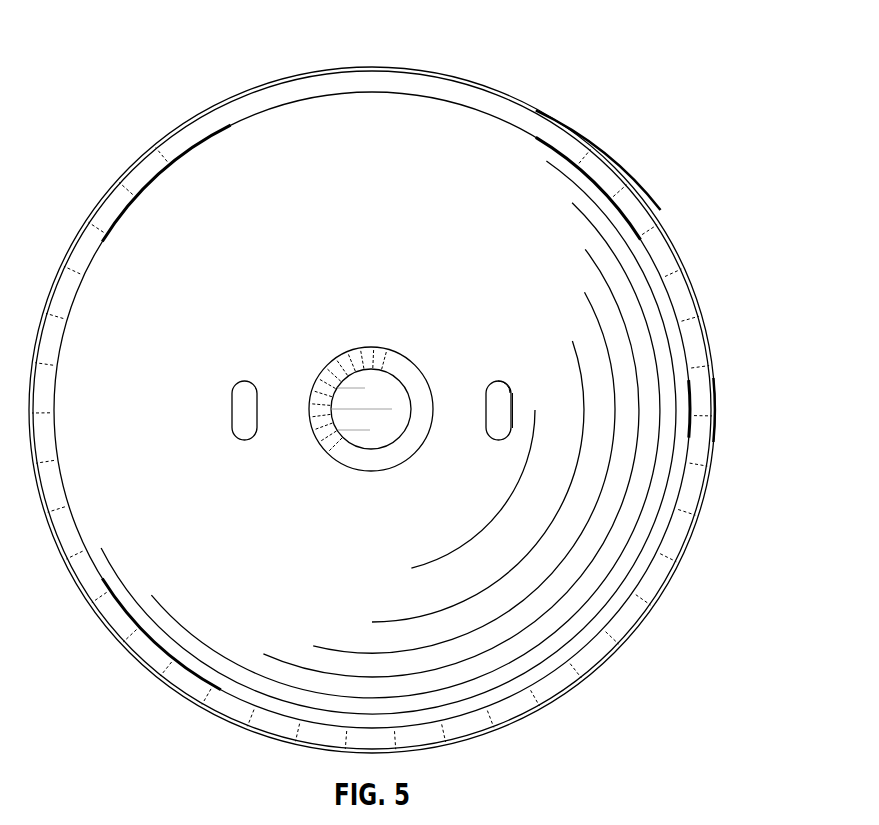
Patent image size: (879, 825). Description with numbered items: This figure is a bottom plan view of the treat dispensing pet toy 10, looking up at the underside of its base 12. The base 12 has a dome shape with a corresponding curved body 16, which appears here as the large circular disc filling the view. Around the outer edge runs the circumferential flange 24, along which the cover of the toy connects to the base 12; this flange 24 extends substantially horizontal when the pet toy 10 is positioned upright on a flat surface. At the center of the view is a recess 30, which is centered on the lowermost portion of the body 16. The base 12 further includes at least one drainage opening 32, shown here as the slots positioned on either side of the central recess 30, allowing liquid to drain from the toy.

The treat dispensing pet toy 10 is at (553, 86).
The base 12 is at (343, 89).
The curved body 16 is at (255, 168).
The circumferential flange 24 is at (461, 87).
The recess 30 is at (388, 395).
The drainage opening 32 is at (244, 393).